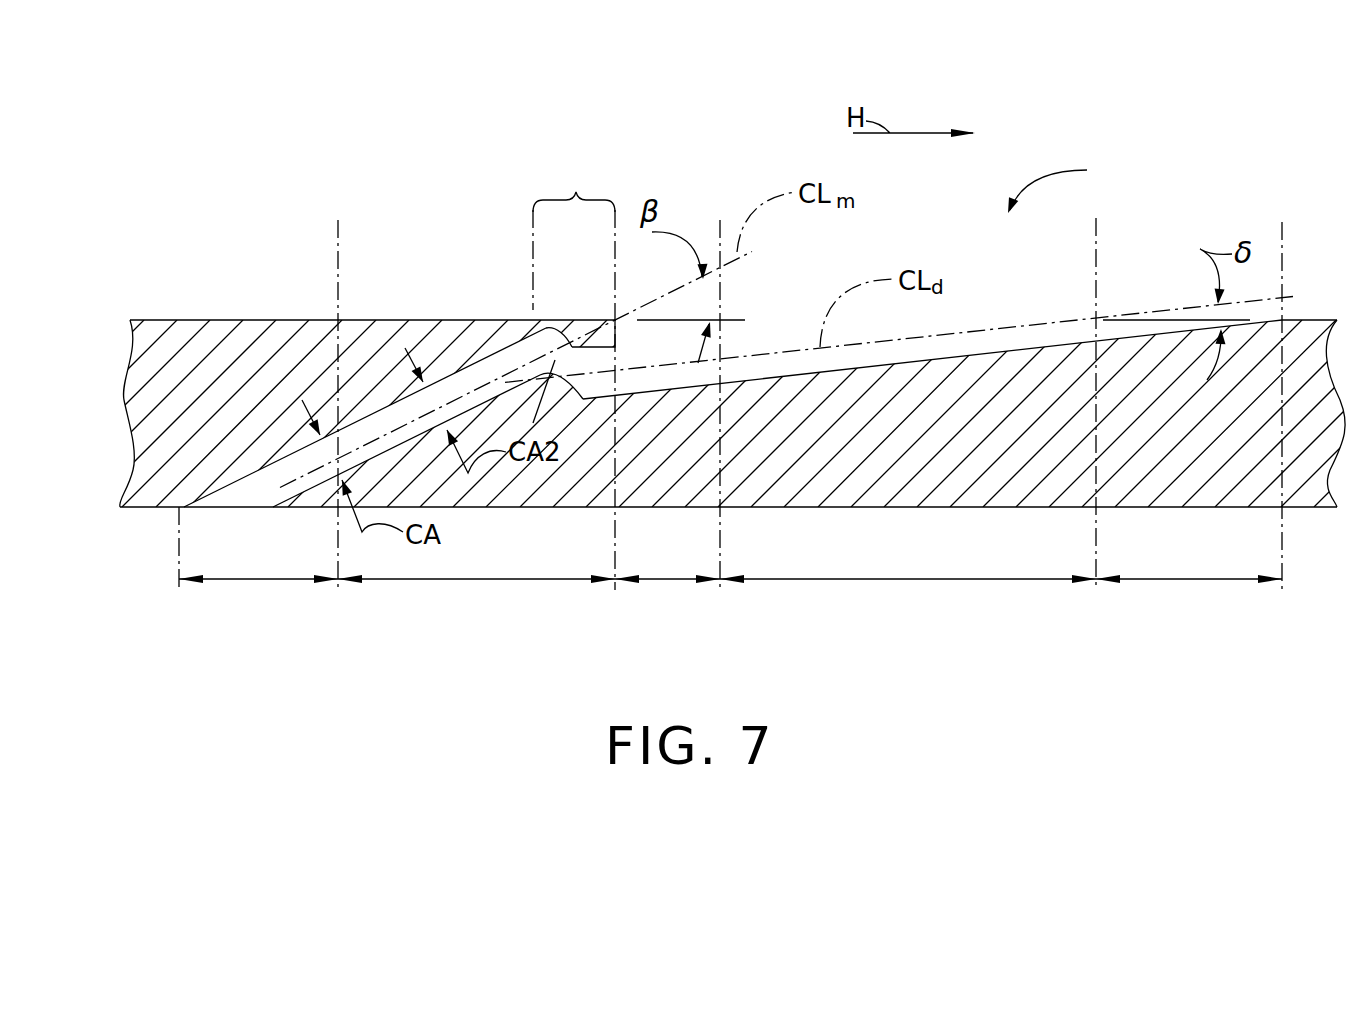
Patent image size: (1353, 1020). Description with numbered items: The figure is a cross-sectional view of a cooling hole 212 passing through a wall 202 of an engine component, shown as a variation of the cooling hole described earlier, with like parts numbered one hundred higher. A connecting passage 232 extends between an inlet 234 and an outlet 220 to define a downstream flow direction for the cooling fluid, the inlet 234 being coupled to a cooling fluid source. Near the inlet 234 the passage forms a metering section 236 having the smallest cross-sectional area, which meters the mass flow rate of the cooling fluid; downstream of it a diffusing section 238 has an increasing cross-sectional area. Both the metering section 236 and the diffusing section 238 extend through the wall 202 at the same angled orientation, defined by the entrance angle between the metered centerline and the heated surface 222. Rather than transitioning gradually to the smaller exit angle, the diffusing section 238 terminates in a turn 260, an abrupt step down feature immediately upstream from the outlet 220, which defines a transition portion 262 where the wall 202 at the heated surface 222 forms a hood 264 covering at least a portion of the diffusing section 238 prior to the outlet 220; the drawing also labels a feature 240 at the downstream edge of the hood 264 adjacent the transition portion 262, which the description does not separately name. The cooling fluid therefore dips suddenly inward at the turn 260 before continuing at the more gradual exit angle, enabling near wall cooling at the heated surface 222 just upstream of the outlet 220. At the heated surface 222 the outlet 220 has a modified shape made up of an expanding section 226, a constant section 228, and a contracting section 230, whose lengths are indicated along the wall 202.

The wall 202 is at (175, 407).
The cooling hole 212 is at (1073, 187).
The outlet 220 is at (938, 332).
The heated surface 222 is at (432, 320).
The expanding section 226 is at (668, 579).
The constant section 228 is at (890, 579).
The contracting section 230 is at (1182, 579).
The connecting passage 232 is at (400, 417).
The inlet 234 is at (252, 505).
The metering section 236 is at (242, 579).
The diffusing section 238 is at (450, 579).
The step / lip 240 is at (615, 320).
The turn 260 is at (545, 385).
The transition portion 262 is at (576, 195).
The hood 264 is at (540, 330).